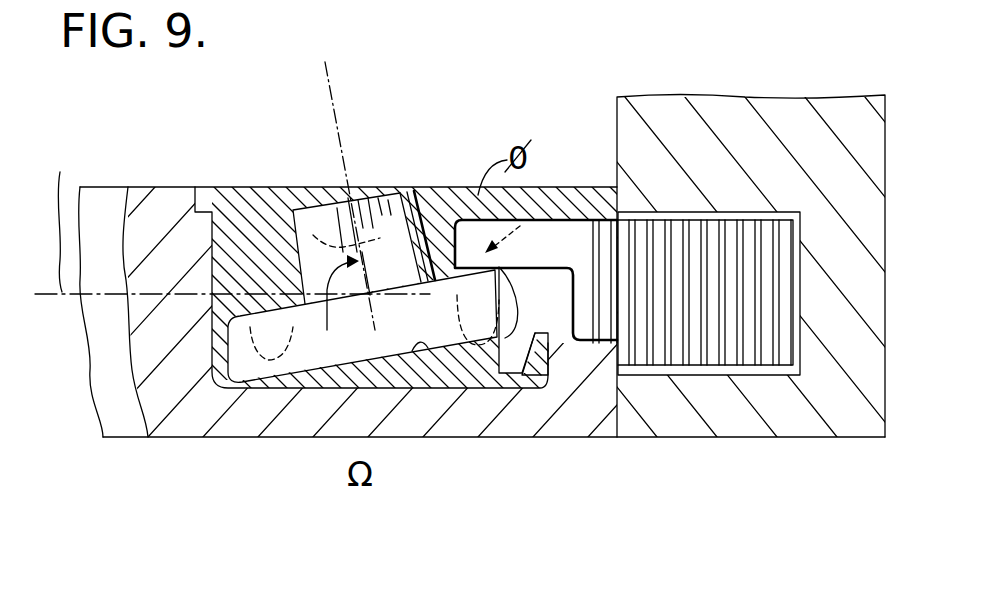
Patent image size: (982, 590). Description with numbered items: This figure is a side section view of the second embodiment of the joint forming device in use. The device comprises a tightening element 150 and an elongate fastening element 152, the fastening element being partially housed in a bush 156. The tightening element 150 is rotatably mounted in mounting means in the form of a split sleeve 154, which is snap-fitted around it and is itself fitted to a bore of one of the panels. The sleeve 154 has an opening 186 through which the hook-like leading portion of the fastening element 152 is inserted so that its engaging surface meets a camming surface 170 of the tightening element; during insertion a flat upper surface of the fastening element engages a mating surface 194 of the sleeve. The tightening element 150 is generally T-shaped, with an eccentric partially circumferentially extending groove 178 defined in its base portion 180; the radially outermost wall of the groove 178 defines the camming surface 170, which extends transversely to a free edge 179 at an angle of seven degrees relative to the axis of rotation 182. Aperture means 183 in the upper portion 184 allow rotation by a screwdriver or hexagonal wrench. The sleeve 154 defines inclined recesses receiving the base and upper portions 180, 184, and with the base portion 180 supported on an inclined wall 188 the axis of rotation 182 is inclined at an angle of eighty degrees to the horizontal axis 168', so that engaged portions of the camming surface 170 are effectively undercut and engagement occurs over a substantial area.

The split sleeve 154 is at (229, 180).
The horizontal axis 168' is at (232, 213).
The bush 156 is at (730, 287).
The elongate fastening element 152 is at (577, 236).
The mating surface 194 is at (548, 222).
The opening 186 is at (540, 310).
The upper portion 184 is at (308, 187).
The tightening element 150 is at (415, 222).
The axis of rotation 182 is at (334, 85).
The aperture means 183 is at (374, 270).
The camming surface 170 is at (251, 330).
The free edge 179 is at (237, 327).
The base portion 180 is at (327, 330).
The inclined wall 188 is at (421, 352).
The eccentric groove 178 is at (470, 360).